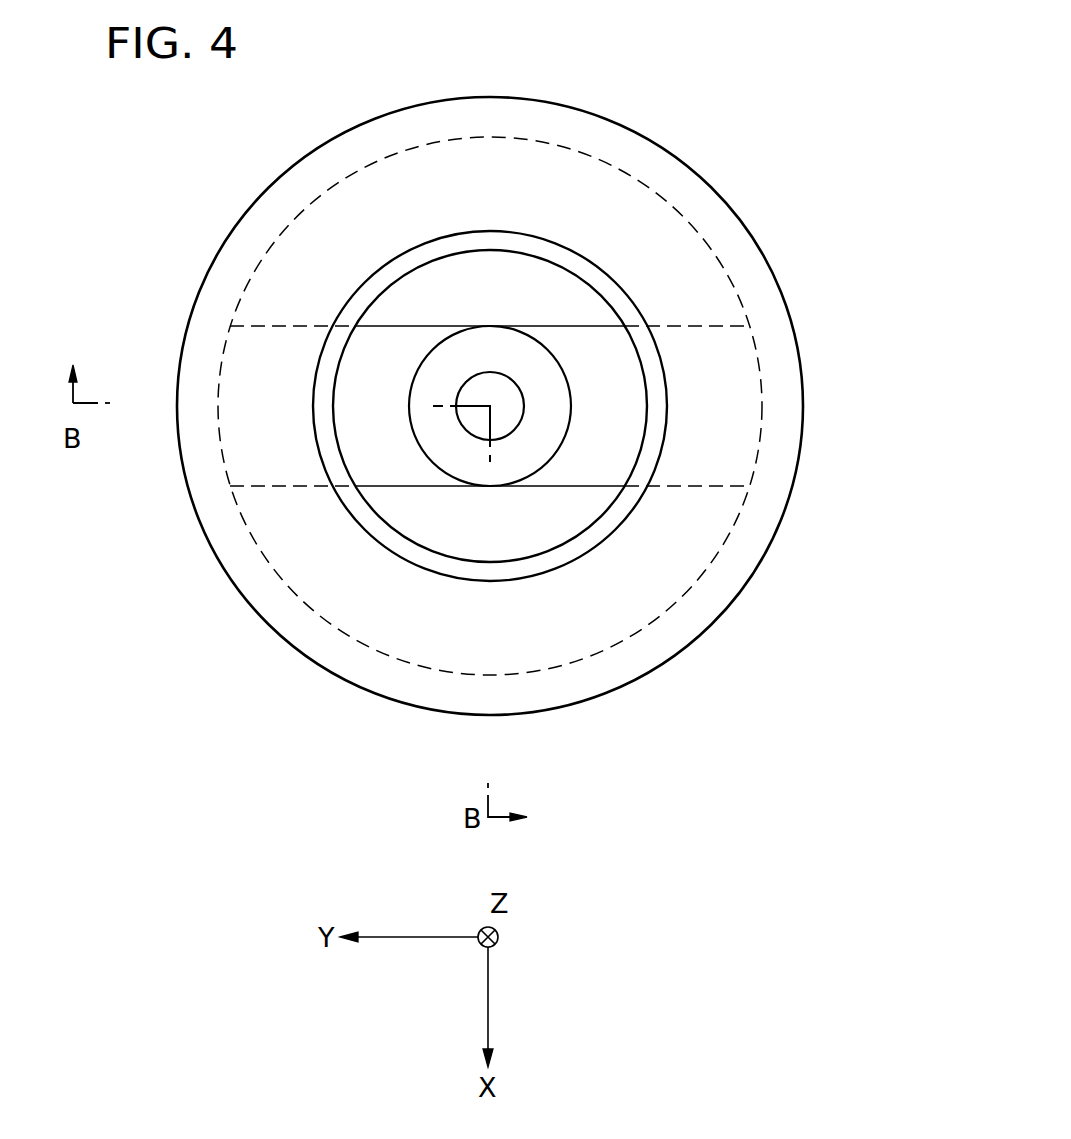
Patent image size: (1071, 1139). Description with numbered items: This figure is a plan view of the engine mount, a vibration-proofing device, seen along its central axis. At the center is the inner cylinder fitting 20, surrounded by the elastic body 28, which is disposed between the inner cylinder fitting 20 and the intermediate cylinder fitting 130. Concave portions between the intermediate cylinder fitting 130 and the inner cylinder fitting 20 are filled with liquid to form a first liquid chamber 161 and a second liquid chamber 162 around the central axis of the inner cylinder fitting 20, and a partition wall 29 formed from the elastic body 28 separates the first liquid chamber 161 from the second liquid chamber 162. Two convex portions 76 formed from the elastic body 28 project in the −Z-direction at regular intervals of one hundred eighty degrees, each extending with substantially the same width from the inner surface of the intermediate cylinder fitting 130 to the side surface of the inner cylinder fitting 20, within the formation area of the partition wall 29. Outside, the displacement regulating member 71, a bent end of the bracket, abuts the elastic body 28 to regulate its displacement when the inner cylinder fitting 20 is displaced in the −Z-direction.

The inner cylinder fitting 20 is at (557, 356).
The elastic body 28 is at (509, 268).
The partition wall 29 is at (242, 438).
The displacement regulating member 71 is at (300, 552).
The convex portion 76 is at (352, 375).
The intermediate cylinder fitting 130 is at (762, 412).
The first liquid chamber 161 is at (650, 582).
The second liquid chamber 162 is at (658, 252).